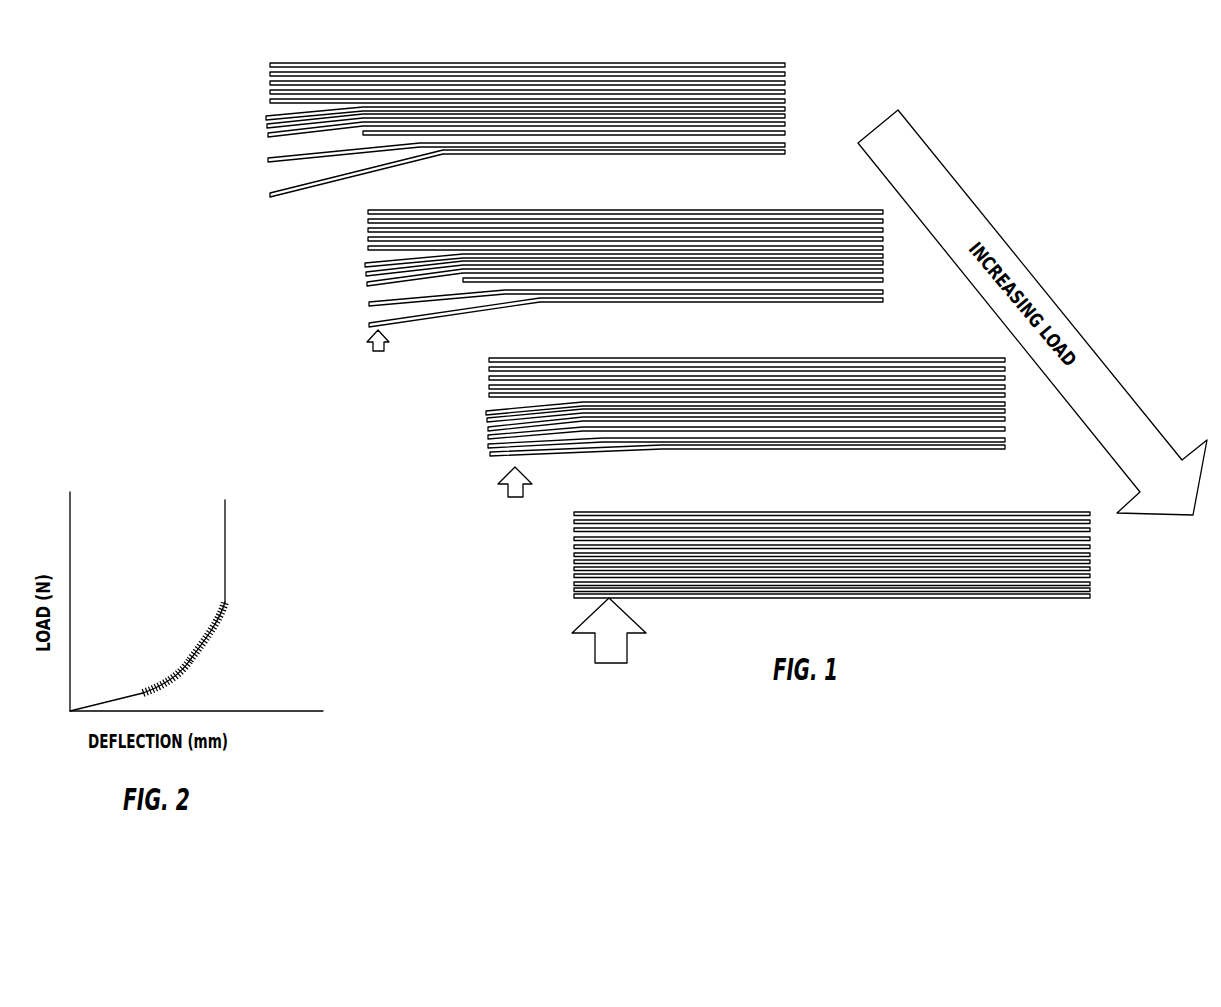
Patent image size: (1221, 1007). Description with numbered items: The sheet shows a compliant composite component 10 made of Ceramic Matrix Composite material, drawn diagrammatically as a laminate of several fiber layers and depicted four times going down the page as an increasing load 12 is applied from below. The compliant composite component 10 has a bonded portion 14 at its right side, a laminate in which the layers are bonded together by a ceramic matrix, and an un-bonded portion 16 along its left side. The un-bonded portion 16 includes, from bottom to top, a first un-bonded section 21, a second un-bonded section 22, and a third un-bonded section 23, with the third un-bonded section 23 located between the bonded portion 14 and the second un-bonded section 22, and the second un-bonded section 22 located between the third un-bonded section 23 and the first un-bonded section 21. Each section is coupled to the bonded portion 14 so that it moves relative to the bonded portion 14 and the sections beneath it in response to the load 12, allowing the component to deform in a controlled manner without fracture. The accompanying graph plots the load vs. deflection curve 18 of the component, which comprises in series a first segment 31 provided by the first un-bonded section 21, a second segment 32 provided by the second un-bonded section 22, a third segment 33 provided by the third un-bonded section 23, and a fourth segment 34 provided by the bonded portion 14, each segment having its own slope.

In FIG. 1, the compliant composite component 10 is at (638, 349).
In FIG. 1, the load 12 is at (380, 352).
In FIG. 1, the bonded portion 14 is at (662, 56).
In FIG. 1, the un-bonded portion 16 is at (240, 176).
In FIG. 1, the first un-bonded section 21 is at (273, 198).
In FIG. 1, the second un-bonded section 22 is at (269, 162).
In FIG. 1, the third un-bonded section 23 is at (265, 128).
In FIG. 2, the load vs. deflection curve 18 is at (192, 597).
In FIG. 2, the first segment 31 is at (104, 702).
In FIG. 2, the second segment 32 is at (178, 685).
In FIG. 2, the third segment 33 is at (215, 635).
In FIG. 2, the fourth segment 34 is at (224, 548).